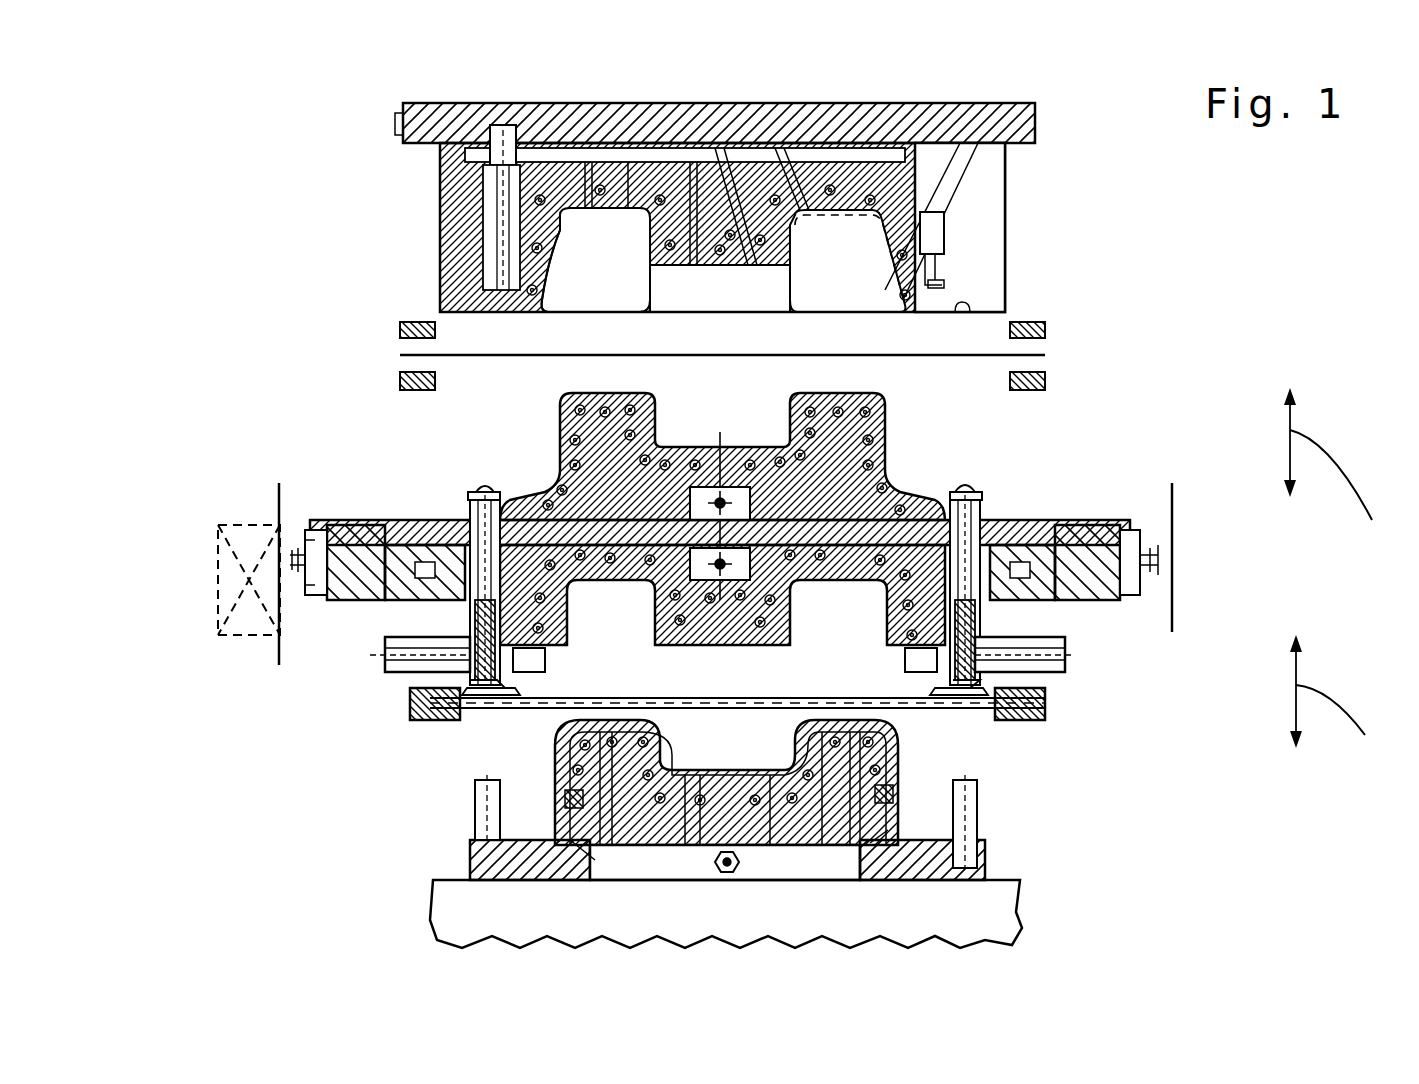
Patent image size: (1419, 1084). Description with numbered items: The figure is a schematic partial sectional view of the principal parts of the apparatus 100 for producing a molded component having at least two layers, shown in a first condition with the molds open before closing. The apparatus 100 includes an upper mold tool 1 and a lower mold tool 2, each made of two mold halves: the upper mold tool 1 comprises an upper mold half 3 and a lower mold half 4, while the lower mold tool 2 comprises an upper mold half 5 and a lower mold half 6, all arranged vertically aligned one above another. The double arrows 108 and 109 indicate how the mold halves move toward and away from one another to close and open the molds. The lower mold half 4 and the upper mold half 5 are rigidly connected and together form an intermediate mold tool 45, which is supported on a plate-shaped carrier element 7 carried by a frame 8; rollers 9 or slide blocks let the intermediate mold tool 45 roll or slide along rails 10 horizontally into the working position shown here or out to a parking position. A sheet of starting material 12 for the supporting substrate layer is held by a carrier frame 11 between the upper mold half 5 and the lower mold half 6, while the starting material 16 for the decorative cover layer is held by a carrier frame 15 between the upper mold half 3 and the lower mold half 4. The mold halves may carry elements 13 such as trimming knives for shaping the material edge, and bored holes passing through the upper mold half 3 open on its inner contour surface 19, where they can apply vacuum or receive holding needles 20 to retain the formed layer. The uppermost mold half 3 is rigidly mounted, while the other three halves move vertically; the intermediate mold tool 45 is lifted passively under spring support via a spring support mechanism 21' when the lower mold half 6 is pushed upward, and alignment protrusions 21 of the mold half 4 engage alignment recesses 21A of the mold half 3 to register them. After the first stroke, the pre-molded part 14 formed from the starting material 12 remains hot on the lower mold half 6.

The apparatus 100 is at (246, 286).
The upper mold tool 1 is at (669, 266).
The lower mold tool 2 is at (627, 817).
The upper mold half 3 is at (1000, 181).
The lower mold half 4 is at (890, 452).
The upper mold half 5 is at (972, 615).
The lower mold half 6 is at (985, 864).
The carrier element 7 is at (1010, 520).
The frame 8 is at (353, 540).
The rollers 9 is at (364, 647).
The rails 10 is at (300, 556).
The carrier frame 11 is at (1045, 703).
The starting material 12 is at (918, 700).
The elements 13 is at (652, 630).
The molded part 14 is at (693, 775).
The carrier frame 15 is at (1048, 328).
The starting material 16 is at (1045, 356).
The inner contour surface 19 is at (560, 212).
The holding needles 20 is at (924, 214).
The alignment protrusions 21 is at (695, 568).
The alignment recesses 21A is at (482, 312).
The spring support mechanism 21' is at (617, 712).
The intermediate mold tool 45 is at (490, 678).
The double arrow 108 is at (1340, 488).
The double arrow 109 is at (1345, 716).